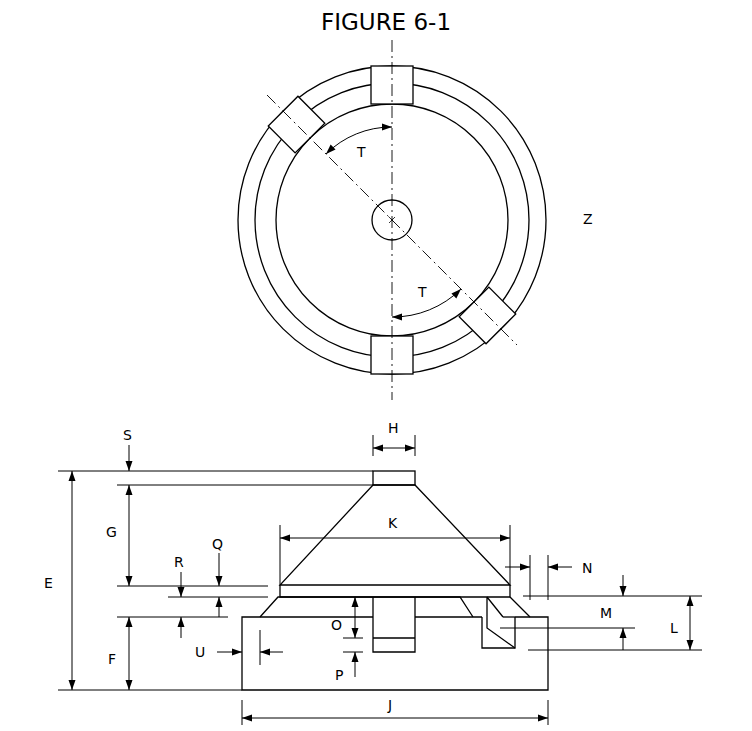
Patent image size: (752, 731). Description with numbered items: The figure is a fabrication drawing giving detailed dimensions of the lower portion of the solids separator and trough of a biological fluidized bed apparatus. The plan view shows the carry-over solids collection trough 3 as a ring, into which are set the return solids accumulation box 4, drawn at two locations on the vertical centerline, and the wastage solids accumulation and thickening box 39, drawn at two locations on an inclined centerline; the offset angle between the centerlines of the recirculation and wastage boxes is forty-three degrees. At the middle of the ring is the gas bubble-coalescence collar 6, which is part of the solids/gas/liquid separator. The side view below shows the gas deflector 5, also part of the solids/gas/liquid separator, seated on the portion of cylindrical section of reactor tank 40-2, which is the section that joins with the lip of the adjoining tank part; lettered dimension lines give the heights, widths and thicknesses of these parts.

The carry-over solids collection trough 3 is at (533, 282).
The return solids accumulation box 4 is at (400, 66).
The wastage solids accumulation and thickening box 39 is at (287, 117).
The gas bubble-coalescence collar 6 is at (412, 218).
The gas deflector 5 is at (443, 513).
The portion of cylindrical section of reactor tank 40-2 is at (548, 675).